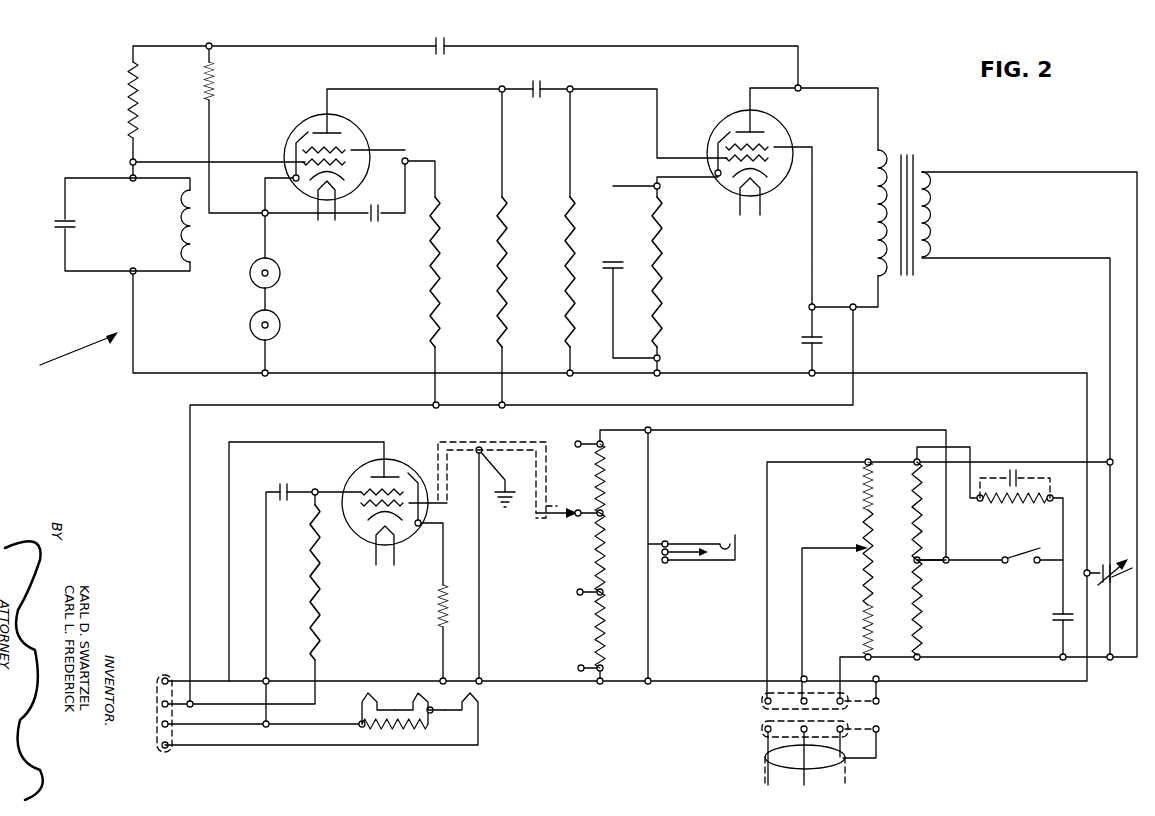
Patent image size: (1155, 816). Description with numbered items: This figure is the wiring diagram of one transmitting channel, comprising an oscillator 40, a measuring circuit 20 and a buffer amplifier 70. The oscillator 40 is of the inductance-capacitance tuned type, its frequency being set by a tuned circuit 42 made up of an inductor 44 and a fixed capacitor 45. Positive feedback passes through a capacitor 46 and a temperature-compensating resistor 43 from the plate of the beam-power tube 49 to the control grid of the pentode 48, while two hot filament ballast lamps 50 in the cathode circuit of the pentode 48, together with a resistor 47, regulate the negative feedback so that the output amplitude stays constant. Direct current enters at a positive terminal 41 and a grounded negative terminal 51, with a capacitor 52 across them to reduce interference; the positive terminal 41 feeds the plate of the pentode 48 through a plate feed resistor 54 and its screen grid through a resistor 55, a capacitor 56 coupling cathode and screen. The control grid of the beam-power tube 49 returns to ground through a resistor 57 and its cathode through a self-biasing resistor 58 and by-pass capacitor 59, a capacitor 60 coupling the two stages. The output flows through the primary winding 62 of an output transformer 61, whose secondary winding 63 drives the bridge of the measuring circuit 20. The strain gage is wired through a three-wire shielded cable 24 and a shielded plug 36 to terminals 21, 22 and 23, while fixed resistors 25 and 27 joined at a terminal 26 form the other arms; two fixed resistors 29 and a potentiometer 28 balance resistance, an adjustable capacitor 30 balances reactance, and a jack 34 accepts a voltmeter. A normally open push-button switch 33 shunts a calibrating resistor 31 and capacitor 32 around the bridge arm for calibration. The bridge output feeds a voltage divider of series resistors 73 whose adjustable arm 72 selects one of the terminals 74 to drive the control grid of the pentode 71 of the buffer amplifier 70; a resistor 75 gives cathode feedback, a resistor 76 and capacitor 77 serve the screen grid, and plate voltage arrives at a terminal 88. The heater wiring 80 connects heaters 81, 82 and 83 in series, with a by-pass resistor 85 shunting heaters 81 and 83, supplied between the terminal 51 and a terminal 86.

The measuring circuit 20 is at (914, 689).
The terminal 21 is at (844, 704).
The terminal 22 is at (880, 733).
The terminal 23 is at (762, 704).
The three-wire shielded cable 24 is at (845, 758).
The fixed resistor 25 is at (912, 522).
The terminal 26 is at (922, 565).
The fixed resistor 27 is at (925, 621).
The potentiometer 28 is at (866, 568).
The fixed resistor 29 is at (866, 636).
The adjustable capacitor 30 is at (1110, 585).
The resistor 31 is at (1027, 501).
The capacitor 32 is at (1014, 468).
The push-button switch 33 is at (1038, 556).
The jack 34 is at (688, 542).
The shielded plug 36 is at (765, 732).
The oscillator 40 is at (66, 355).
The positive terminal 41 is at (157, 700).
The tuned circuit 42 is at (81, 174).
The resistor 43 is at (130, 98).
The inductor 44 is at (182, 222).
The fixed capacitor 45 is at (70, 220).
The capacitor 46 is at (446, 40).
The resistor 47 is at (213, 82).
The pentode 48 is at (352, 138).
The beam-power tube 49 is at (726, 183).
The ballast lamps 50 is at (283, 322).
The negative terminal 51 is at (162, 728).
The capacitor 52 is at (810, 338).
The plate feed resistor 54 is at (505, 275).
The resistor 55 is at (440, 266).
The capacitor 56 is at (379, 224).
The resistor 57 is at (568, 220).
The self-biasing resistor 58 is at (668, 275).
The by-pass capacitor 59 is at (614, 272).
The capacitor 60 is at (546, 84).
The output transformer 61 is at (918, 151).
The primary winding 62 is at (888, 148).
The secondary winding 63 is at (938, 165).
The buffer amplifier 70 is at (488, 573).
The pentode 71 is at (398, 462).
The adjustable arm 72 is at (568, 519).
The resistors 73 is at (606, 612).
The terminals 74 is at (581, 663).
The resistor 75 is at (440, 603).
The resistor 76 is at (320, 578).
The capacitor 77 is at (280, 484).
The heater wiring 80 is at (488, 725).
The heater 81 is at (345, 208).
The heater 82 is at (760, 190).
The heater 83 is at (393, 545).
The by-pass resistor 85 is at (397, 730).
The terminal 86 is at (166, 748).
The terminal 88 is at (163, 678).